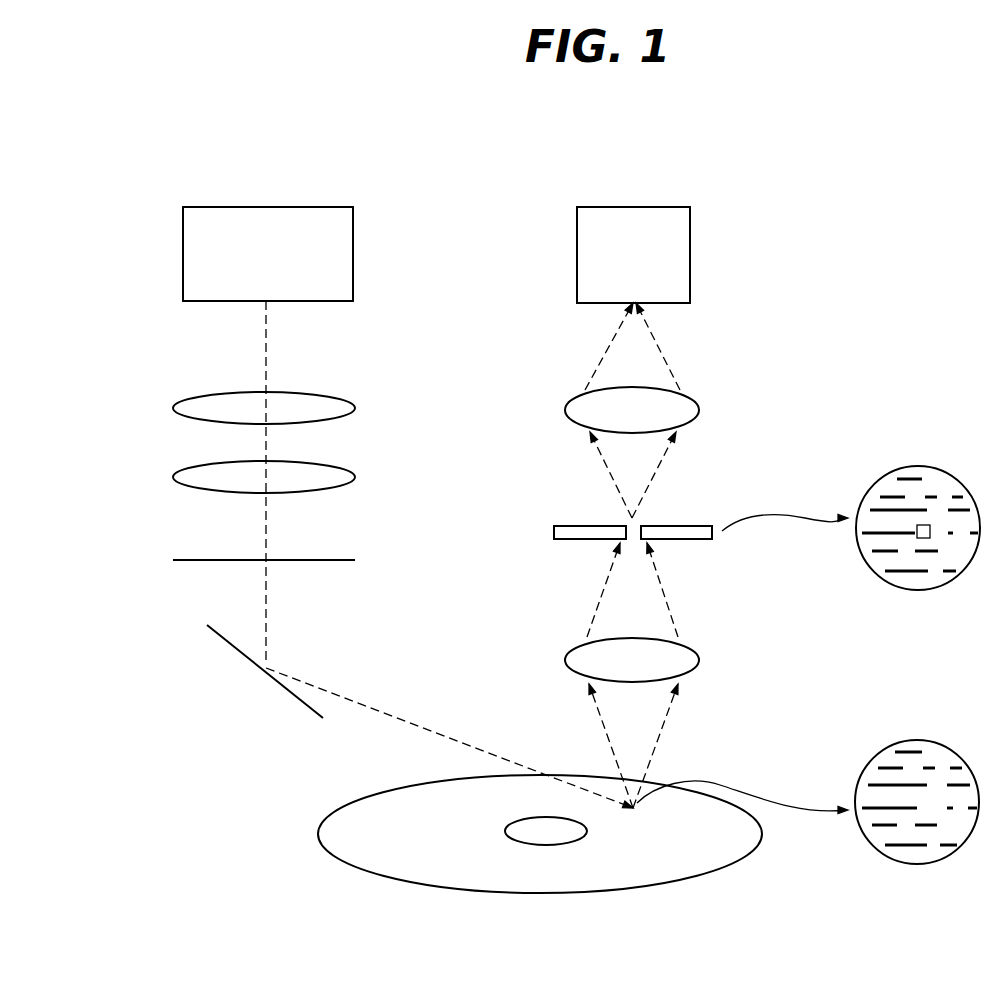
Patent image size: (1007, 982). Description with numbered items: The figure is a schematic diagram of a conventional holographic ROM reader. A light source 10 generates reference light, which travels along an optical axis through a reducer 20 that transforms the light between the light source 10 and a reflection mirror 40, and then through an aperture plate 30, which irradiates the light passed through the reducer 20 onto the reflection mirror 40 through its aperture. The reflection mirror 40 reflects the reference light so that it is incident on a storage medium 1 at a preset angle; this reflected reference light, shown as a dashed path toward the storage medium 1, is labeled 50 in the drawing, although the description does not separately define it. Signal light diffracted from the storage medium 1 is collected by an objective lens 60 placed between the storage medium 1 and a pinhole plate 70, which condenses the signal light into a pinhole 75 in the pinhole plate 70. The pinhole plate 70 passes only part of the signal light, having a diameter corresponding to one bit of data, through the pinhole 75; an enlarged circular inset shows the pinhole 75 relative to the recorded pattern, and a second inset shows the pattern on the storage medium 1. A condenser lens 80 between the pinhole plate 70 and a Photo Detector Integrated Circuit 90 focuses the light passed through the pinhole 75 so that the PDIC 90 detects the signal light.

The storage medium 1 is at (352, 848).
The light source 10 is at (332, 207).
The reducer 20 is at (373, 407).
The aperture plate 30 is at (340, 560).
The reflection mirror 40 is at (291, 694).
The light beam 50 is at (425, 730).
The objective lens 60 is at (696, 650).
The pinhole plate 70 is at (562, 526).
The pinhole 75 is at (917, 525).
The condenser lens 80 is at (698, 400).
The Photo Detector Integrated Circuit (PDIC) 90 is at (668, 207).